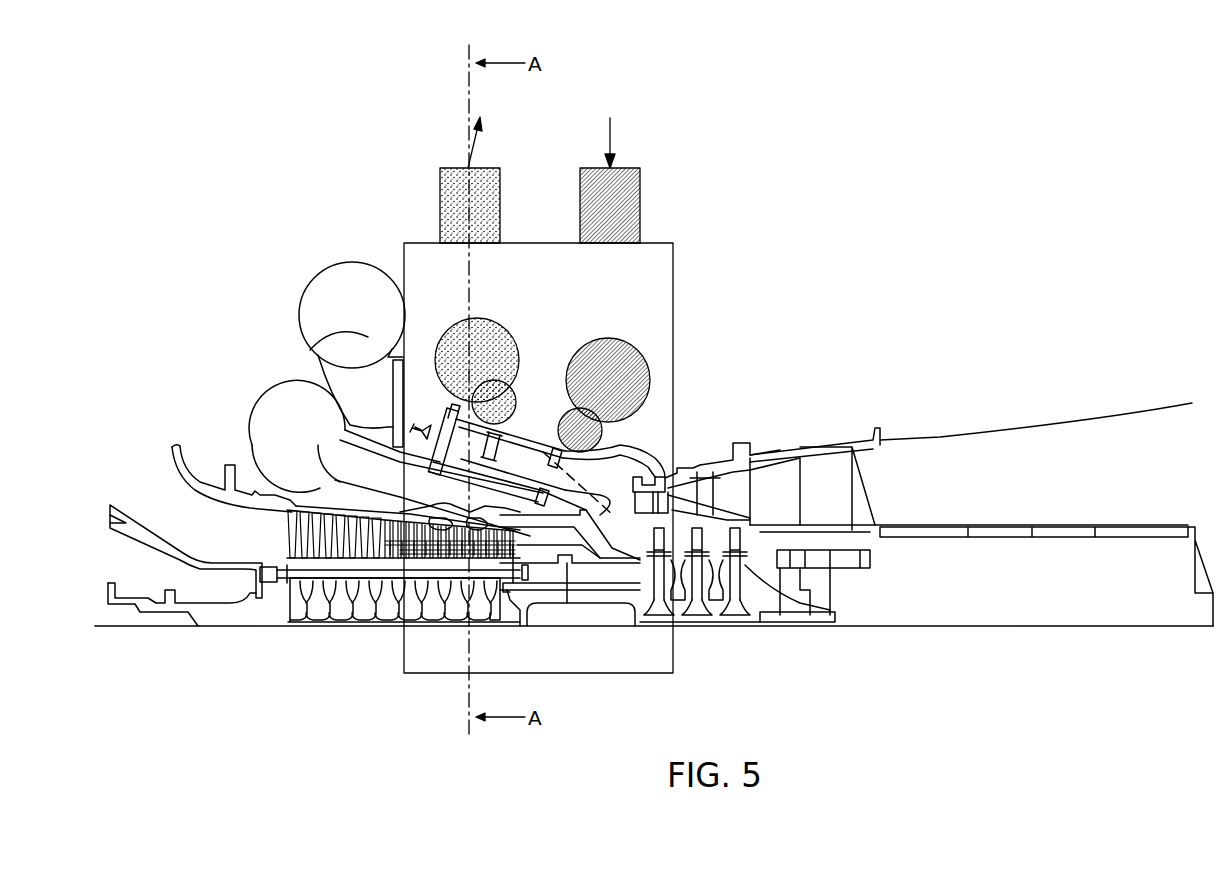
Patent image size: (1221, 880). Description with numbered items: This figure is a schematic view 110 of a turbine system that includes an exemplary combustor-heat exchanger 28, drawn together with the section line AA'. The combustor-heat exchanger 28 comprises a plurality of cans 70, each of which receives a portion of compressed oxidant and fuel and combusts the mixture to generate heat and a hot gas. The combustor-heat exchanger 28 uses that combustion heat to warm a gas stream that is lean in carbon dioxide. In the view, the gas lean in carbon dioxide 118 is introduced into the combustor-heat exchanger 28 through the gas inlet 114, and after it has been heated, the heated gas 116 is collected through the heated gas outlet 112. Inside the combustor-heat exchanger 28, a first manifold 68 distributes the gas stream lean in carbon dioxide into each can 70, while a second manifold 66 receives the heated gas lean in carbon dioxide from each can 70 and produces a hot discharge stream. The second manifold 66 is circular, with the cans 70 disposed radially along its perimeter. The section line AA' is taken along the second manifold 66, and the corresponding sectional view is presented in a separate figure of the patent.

The schematic view 110 is at (1098, 80).
The combustor-heat exchanger 28 is at (673, 286).
The heated gas outlet 112 is at (452, 216).
The gas inlet 114 is at (632, 209).
The heated gas 116 is at (473, 136).
The gas lean in CO2 118 is at (612, 136).
The second manifold 66 is at (494, 334).
The first manifold 68 is at (608, 345).
The can 70 is at (553, 448).